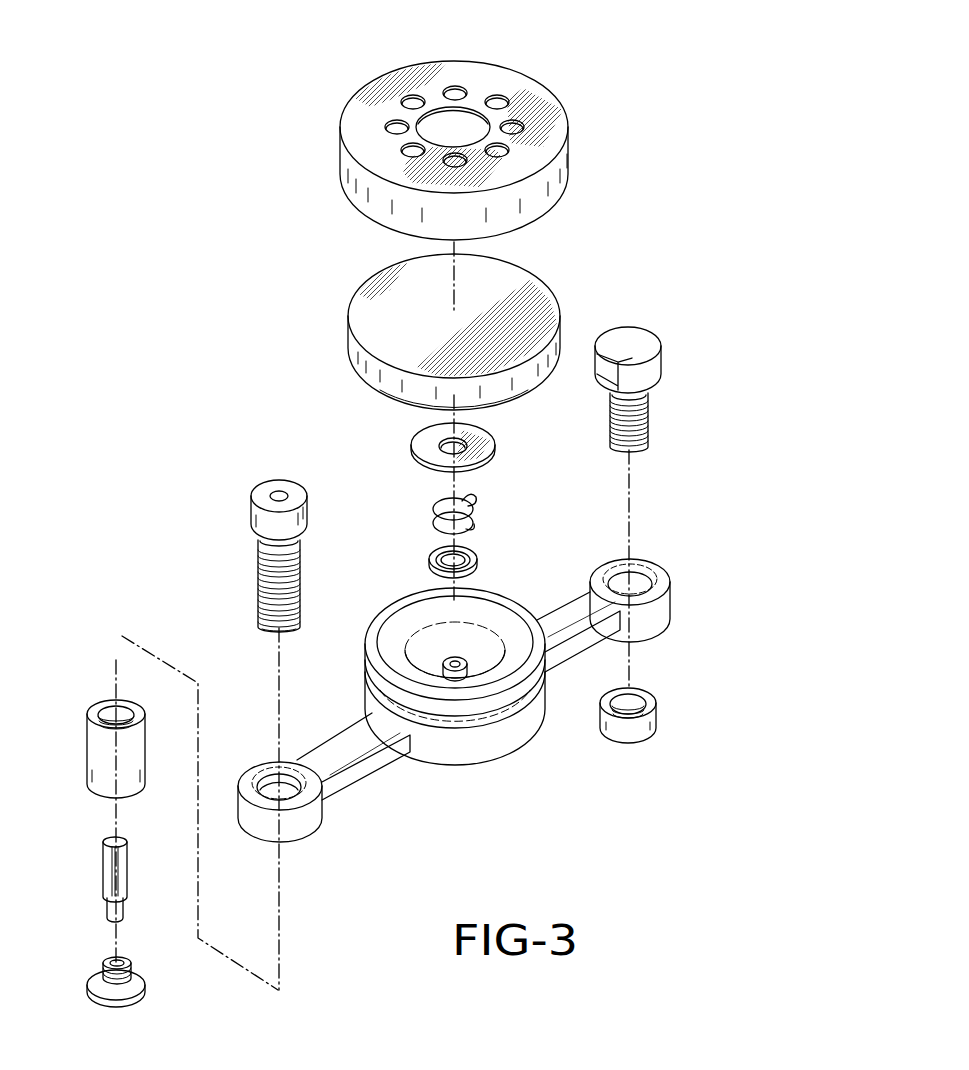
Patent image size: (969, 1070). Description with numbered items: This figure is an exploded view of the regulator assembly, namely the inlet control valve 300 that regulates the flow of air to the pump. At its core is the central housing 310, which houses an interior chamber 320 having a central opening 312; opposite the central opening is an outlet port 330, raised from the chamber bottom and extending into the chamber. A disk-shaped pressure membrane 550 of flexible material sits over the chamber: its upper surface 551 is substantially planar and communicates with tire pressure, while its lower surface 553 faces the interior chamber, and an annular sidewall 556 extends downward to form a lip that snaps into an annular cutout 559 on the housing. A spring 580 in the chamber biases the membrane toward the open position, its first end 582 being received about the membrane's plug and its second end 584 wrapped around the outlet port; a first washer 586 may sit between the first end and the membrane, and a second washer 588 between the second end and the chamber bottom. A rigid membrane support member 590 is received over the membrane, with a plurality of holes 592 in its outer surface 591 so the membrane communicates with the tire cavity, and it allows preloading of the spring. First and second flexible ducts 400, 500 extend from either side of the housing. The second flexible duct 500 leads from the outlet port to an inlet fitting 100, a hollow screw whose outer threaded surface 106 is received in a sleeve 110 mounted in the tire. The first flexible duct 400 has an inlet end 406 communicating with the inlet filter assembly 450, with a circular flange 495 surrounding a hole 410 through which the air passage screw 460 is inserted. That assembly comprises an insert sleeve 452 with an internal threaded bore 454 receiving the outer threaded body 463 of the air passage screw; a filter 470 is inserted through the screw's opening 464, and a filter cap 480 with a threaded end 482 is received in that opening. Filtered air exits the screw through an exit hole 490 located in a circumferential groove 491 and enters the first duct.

The inlet fitting 100 is at (672, 300).
The outer threaded surface 106 is at (645, 420).
The sleeve 110 is at (645, 735).
The inlet control valve 300 is at (298, 158).
The central housing 310 is at (450, 750).
The central opening 312 is at (405, 625).
The interior chamber 320 is at (487, 658).
The outlet port 330 is at (445, 665).
The first flexible duct 400 is at (350, 746).
The second end 406 is at (290, 790).
The hole 410 is at (268, 788).
The inlet filter assembly 450 is at (228, 465).
The insert sleeve 452 is at (98, 748).
The internal threaded bore 454 is at (112, 705).
The air passage screw 460 is at (258, 573).
The outer threaded body 463 is at (268, 588).
The opening 464 is at (265, 626).
The filter 470 is at (108, 862).
The filter cap 480 is at (133, 985).
The threaded end 482 is at (102, 967).
The exit hole 490 is at (272, 540).
The circumferential groove 491 is at (282, 547).
The circular flange 495 is at (246, 776).
The second flexible duct 500 is at (580, 608).
The pressure membrane 550 is at (494, 282).
The upper surface 551 is at (424, 332).
The lower surface 553 is at (511, 401).
The annular sidewall 556 is at (356, 349).
The annular cutout 559 is at (470, 700).
The spring 580 is at (471, 513).
The first end 582 is at (468, 497).
The second end 584 is at (471, 523).
The first washer 586 is at (428, 444).
The second washer 588 is at (437, 562).
The membrane support member 590 is at (537, 68).
The outer surface 591 is at (540, 135).
The holes 592 is at (437, 108).